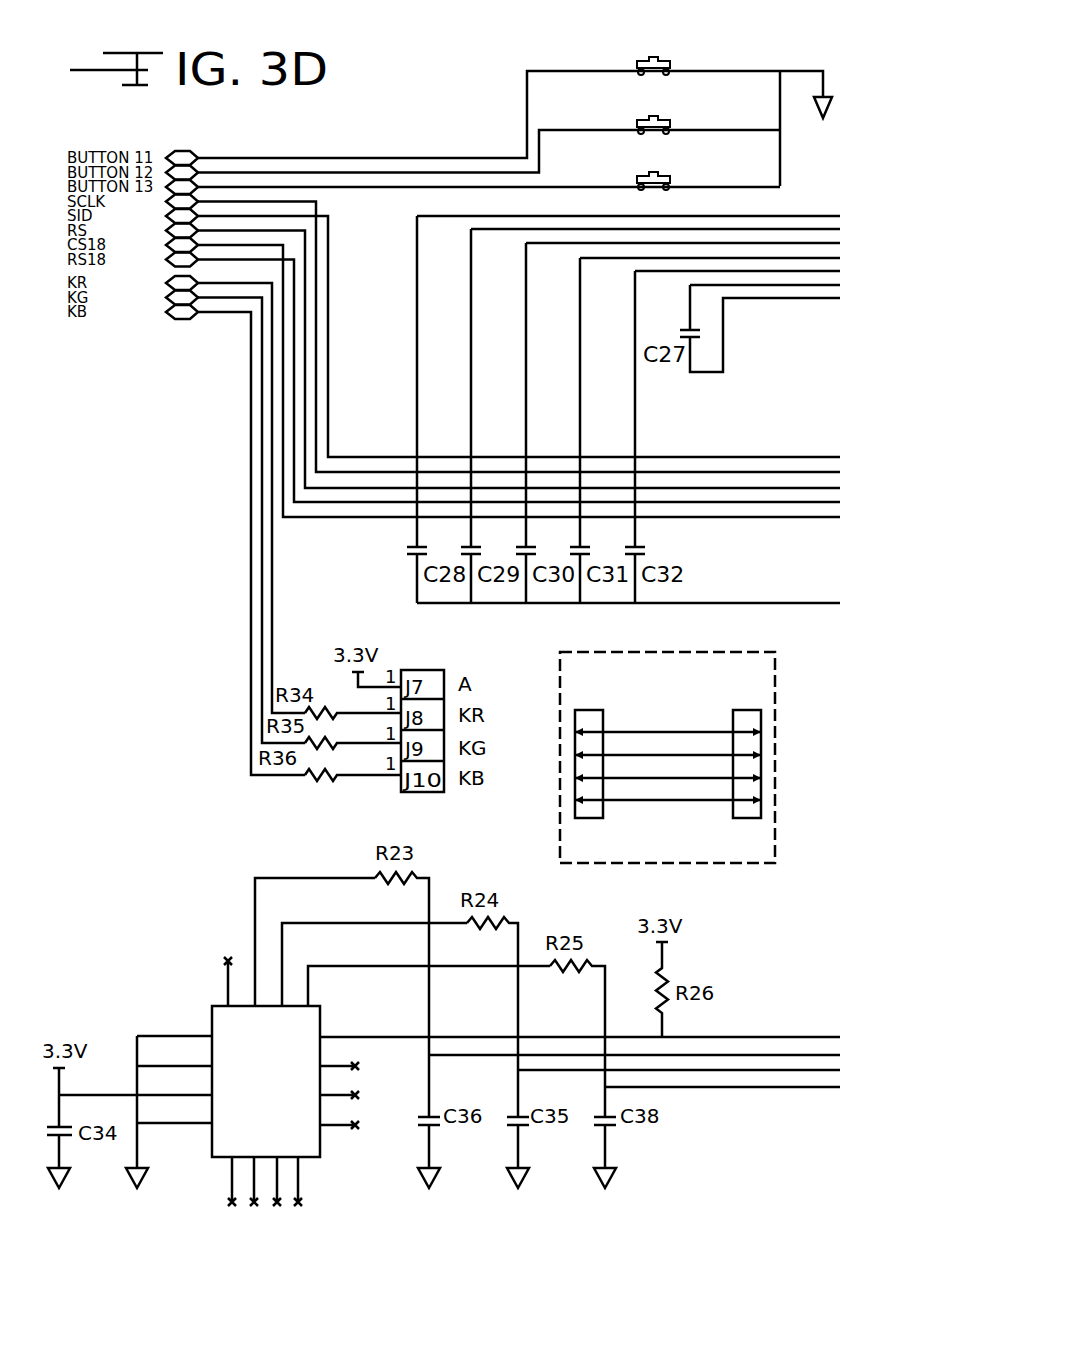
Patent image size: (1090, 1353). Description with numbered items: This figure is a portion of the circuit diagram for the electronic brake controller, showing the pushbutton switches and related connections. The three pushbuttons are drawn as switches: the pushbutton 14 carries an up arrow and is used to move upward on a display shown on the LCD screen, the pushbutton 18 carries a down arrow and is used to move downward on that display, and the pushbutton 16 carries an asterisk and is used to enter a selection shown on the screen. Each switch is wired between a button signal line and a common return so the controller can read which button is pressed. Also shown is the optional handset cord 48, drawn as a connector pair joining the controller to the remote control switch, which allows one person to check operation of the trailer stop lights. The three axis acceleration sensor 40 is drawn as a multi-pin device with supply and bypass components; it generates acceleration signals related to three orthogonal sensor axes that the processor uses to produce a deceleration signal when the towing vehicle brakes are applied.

The pushbutton 14 is at (659, 57).
The pushbutton 18 is at (664, 111).
The pushbutton 16 is at (660, 167).
The handset cord 48 is at (680, 725).
The three axis acceleration sensor 40 is at (278, 1088).